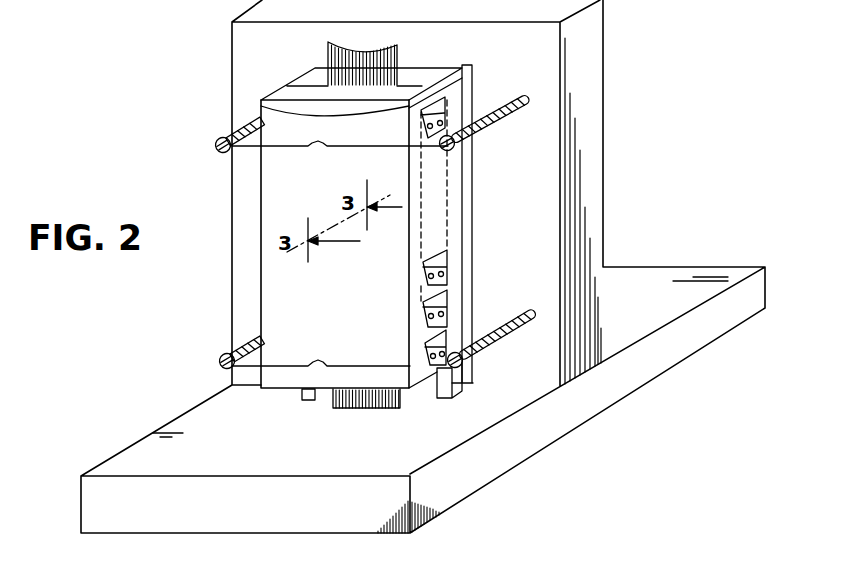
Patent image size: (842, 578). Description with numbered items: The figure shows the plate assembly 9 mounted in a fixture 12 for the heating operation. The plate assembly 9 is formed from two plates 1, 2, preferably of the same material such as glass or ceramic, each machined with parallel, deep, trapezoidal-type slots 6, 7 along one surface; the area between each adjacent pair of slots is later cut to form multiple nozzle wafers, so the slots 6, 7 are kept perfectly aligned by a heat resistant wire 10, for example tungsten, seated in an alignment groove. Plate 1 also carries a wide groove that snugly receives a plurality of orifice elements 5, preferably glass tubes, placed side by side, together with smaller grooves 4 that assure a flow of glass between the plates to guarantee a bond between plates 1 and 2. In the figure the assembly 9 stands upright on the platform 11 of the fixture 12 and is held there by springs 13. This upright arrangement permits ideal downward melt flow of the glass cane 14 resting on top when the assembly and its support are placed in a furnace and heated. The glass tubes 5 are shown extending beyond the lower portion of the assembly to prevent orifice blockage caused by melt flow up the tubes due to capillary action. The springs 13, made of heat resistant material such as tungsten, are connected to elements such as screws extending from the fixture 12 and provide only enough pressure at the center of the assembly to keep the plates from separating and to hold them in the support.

The plate 1 is at (305, 68).
The plate 2 is at (281, 95).
The smaller grooves 4 is at (410, 83).
The orifice elements 5 is at (337, 408).
The trapezoidal-type slots 6 is at (450, 297).
The trapezoidal-type slots 7 is at (426, 347).
The plate assembly 9 is at (452, 185).
The wire 10 is at (283, 112).
The platform 11 is at (300, 393).
The fixture 12 is at (642, 273).
The springs 13 is at (300, 150).
The glass cane 14 is at (437, 117).